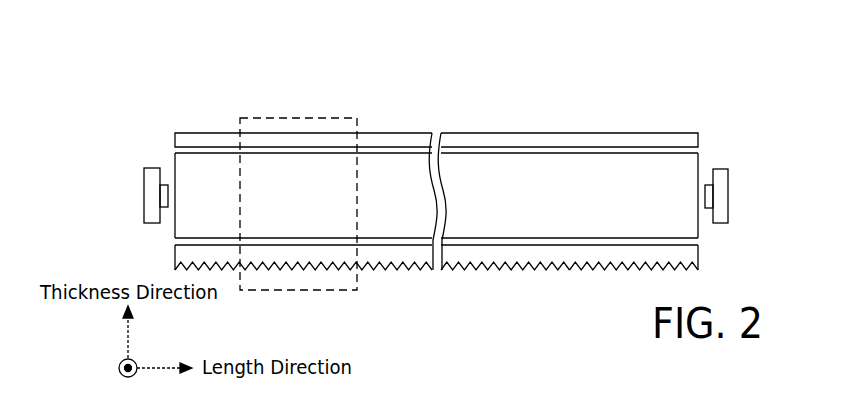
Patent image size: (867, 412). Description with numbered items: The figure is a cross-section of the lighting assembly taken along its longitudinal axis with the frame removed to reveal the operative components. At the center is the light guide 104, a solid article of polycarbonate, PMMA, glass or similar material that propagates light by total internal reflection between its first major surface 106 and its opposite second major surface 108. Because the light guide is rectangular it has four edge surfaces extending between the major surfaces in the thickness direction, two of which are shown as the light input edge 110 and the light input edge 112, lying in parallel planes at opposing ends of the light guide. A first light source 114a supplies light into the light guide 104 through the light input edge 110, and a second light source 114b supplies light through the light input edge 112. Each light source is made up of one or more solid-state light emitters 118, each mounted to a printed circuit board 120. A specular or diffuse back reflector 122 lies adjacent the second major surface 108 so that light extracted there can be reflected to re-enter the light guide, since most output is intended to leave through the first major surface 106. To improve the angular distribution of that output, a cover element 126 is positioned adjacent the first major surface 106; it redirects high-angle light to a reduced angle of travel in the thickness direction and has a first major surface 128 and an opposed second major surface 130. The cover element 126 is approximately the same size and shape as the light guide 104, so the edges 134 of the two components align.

The light guide 104 is at (213, 173).
The first major surface 106 is at (382, 240).
The second major surface 108 is at (380, 153).
The light input edge 110 is at (176, 172).
The light input edge 112 is at (698, 170).
The first light source 114a is at (130, 218).
The second light source 114b is at (744, 223).
The solid-state light emitter 118 is at (163, 197).
The printed circuit board 120 is at (150, 177).
The back reflector 122 is at (418, 142).
The cover element 126 is at (480, 262).
The first major surface 128 is at (535, 247).
The second major surface 130 is at (580, 270).
The edges 134 is at (175, 253).